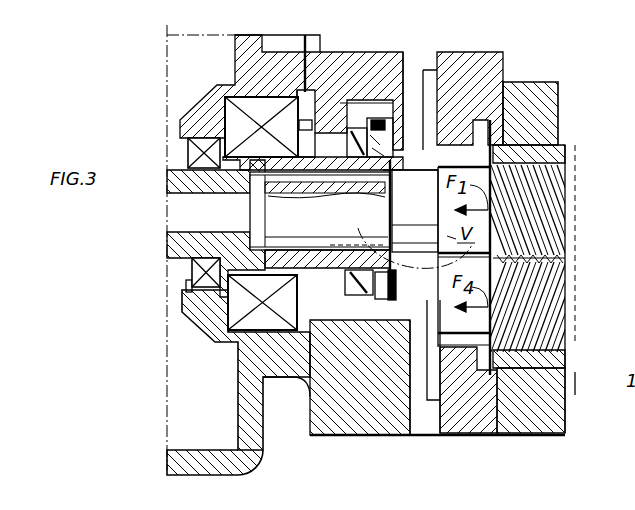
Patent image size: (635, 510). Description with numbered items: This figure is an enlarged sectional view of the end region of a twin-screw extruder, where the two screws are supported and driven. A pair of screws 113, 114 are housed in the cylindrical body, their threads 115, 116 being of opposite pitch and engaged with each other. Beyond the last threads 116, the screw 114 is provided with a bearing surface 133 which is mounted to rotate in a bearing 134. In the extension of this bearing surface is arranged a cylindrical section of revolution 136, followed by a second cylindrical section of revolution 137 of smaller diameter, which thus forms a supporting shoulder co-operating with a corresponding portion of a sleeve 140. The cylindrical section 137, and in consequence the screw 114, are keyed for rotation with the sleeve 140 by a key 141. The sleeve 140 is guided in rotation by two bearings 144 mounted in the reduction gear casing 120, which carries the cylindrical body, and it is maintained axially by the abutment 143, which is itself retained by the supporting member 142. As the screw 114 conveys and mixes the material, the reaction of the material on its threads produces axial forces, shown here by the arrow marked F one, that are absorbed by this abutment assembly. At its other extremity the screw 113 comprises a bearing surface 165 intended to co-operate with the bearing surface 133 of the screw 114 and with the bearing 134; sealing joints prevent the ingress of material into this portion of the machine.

The screw 113 is at (545, 320).
The screw 114 is at (566, 199).
The thread 115 is at (568, 296).
The thread 116 is at (566, 232).
The casing 120 is at (265, 445).
The bearing surface 133 is at (560, 100).
The bearing 134 is at (490, 133).
The cylindrical section of revolution 136 is at (432, 229).
The second cylindrical section of revolution 137 is at (338, 229).
The sleeve 140 is at (192, 251).
The key 141 is at (253, 207).
The supporting member 142 is at (200, 313).
The abutment 143 is at (230, 112).
The bearing 144 is at (188, 290).
The bearing surface 165 is at (470, 335).